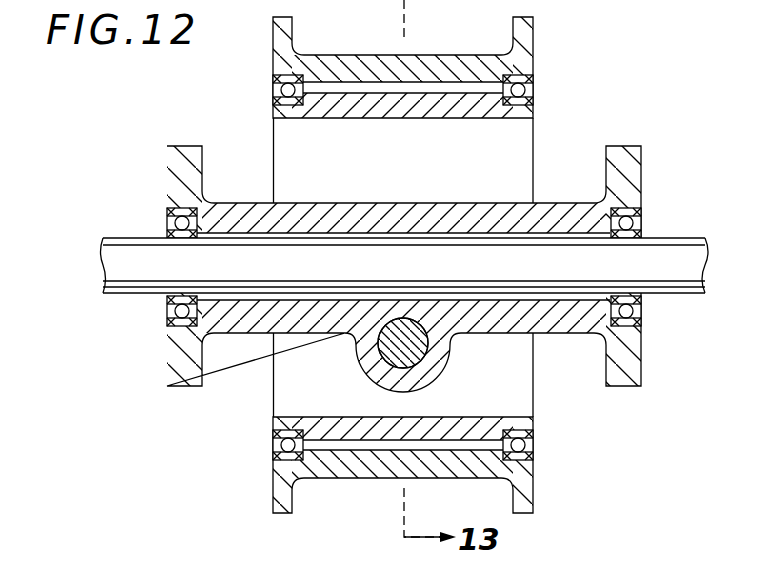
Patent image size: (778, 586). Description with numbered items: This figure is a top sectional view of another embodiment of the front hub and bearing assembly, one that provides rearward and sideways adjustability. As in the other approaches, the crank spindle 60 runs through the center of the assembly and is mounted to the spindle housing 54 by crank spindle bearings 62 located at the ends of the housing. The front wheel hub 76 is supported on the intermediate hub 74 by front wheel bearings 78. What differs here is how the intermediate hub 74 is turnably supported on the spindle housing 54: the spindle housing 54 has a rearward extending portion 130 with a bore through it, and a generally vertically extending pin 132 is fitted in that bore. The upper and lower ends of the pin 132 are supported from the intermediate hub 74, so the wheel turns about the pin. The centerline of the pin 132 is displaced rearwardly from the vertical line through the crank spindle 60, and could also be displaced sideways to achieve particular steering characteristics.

The spindle housing 54 is at (553, 334).
The crank spindle 60 is at (680, 293).
The crank spindle bearings 62 is at (642, 322).
The intermediate hub 74 is at (436, 417).
The front wheel hub 76 is at (535, 487).
The front wheel bearings 78 is at (535, 450).
The rearward extending portion 130 is at (368, 377).
The pin 132 is at (426, 357).